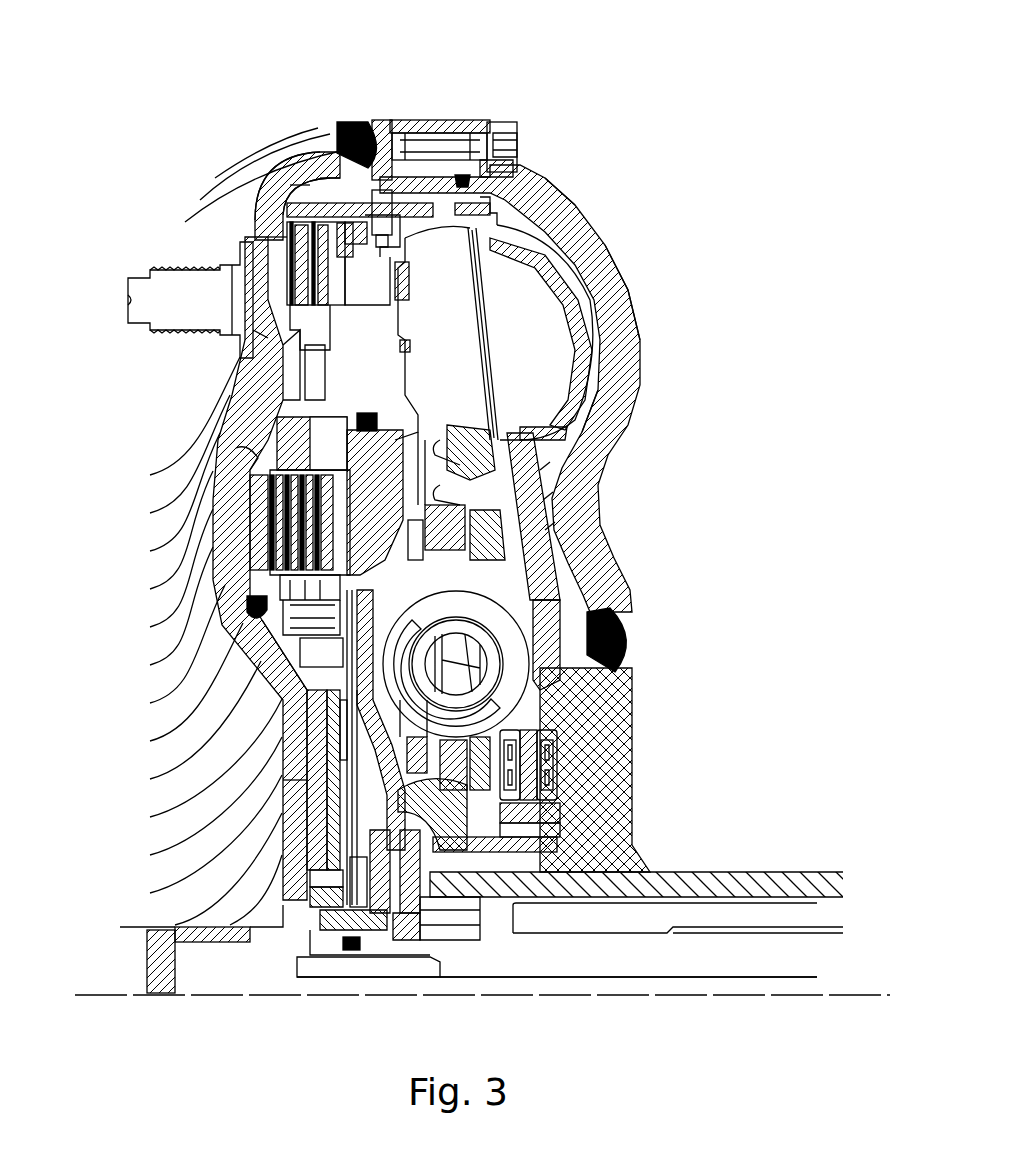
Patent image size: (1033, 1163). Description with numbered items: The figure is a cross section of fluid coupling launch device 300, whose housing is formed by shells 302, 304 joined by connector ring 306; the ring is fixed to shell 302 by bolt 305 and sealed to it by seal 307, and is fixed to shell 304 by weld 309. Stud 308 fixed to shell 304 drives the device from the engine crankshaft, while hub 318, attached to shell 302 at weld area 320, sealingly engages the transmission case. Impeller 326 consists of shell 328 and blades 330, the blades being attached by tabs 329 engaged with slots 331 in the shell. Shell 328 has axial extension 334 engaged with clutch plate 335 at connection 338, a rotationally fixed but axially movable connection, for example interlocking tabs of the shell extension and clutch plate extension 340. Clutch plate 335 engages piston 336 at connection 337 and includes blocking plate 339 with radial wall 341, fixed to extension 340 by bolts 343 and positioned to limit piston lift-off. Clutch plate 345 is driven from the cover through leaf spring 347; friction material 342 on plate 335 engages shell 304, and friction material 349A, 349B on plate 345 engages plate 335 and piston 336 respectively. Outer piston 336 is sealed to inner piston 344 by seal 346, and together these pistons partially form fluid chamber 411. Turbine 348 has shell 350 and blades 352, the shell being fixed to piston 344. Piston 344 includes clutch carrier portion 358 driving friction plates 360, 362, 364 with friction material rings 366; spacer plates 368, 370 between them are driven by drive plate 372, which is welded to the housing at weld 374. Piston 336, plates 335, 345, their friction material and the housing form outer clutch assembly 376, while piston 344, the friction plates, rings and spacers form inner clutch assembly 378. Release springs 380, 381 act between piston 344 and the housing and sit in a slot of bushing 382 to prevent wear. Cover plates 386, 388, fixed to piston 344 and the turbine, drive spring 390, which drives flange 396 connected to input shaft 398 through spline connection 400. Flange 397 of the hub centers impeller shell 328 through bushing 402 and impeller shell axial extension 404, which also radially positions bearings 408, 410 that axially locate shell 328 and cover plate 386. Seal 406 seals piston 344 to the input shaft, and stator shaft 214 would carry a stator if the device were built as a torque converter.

The fluid coupling launch device 300 is at (628, 178).
The shell 302 is at (637, 372).
The shell 304 is at (283, 875).
The bolt 305 is at (505, 122).
The connector ring 306 is at (352, 120).
The seal 307 is at (487, 165).
The stud 308 is at (201, 311).
The weld 309 is at (330, 172).
The hub 318 is at (600, 877).
The weld area 320 is at (628, 640).
The impeller 326 is at (590, 295).
The shell 328 is at (603, 402).
The tabs 329 is at (523, 242).
The blades 330 is at (563, 364).
The slots 331 is at (503, 226).
The axial extension 334 is at (465, 178).
The clutch plate 335 is at (290, 210).
The piston 336 is at (258, 465).
The connection 337 is at (300, 195).
The connection 338 is at (393, 185).
The blocking plate 339 is at (320, 185).
The clutch plate extension 340 is at (268, 196).
The radial wall 341 is at (262, 237).
The friction material 342 is at (262, 338).
The bolts 343 is at (300, 178).
The inner piston 344 is at (305, 840).
The clutch plate 345 is at (248, 422).
The seal 346 is at (272, 505).
The leaf spring 347 is at (262, 478).
The turbine 348 is at (445, 195).
The friction material 349A is at (300, 330).
The friction material 349B is at (305, 348).
The shell 350 is at (505, 462).
The blades 352 is at (468, 364).
The clutch carrier portion 358 is at (262, 515).
The friction plate 360 is at (285, 545).
The friction plate 362 is at (300, 560).
The friction plate 364 is at (318, 580).
The friction material rings 366 is at (362, 680).
The spacer plate 368 is at (258, 615).
The spacer plate 370 is at (278, 657).
The drive plate 372 is at (312, 690).
The weld 374 is at (335, 700).
The outer clutch assembly 376 is at (270, 240).
The inner clutch assembly 378 is at (283, 792).
The release spring 380 is at (310, 897).
The release spring 381 is at (320, 913).
The bushing 382 is at (295, 935).
The cover plate 386 is at (520, 512).
The cover plate 388 is at (480, 520).
The spring 390 is at (505, 637).
The flange 396 is at (400, 880).
The flange 397 is at (540, 860).
The input shaft 398 is at (541, 972).
The spline connection 400 is at (458, 885).
The bushing 402 is at (545, 805).
The impeller shell axial extension 404 is at (555, 790).
The seal 406 is at (340, 930).
The bearing 408 is at (530, 740).
The bearing 410 is at (567, 738).
The fluid chamber 411 is at (381, 290).
The stator shaft 214 is at (611, 932).